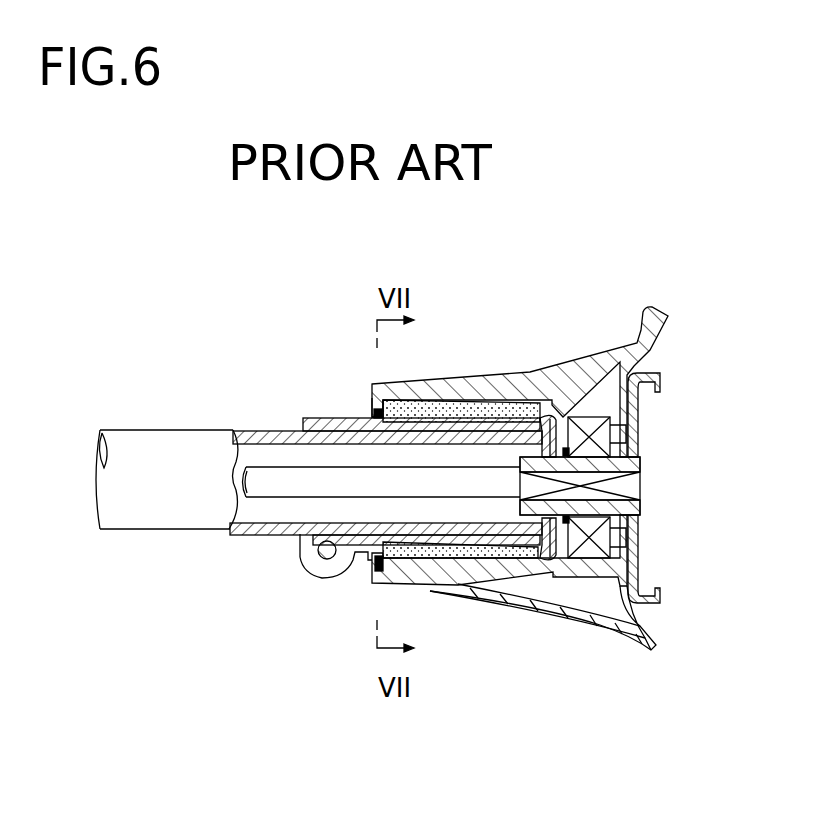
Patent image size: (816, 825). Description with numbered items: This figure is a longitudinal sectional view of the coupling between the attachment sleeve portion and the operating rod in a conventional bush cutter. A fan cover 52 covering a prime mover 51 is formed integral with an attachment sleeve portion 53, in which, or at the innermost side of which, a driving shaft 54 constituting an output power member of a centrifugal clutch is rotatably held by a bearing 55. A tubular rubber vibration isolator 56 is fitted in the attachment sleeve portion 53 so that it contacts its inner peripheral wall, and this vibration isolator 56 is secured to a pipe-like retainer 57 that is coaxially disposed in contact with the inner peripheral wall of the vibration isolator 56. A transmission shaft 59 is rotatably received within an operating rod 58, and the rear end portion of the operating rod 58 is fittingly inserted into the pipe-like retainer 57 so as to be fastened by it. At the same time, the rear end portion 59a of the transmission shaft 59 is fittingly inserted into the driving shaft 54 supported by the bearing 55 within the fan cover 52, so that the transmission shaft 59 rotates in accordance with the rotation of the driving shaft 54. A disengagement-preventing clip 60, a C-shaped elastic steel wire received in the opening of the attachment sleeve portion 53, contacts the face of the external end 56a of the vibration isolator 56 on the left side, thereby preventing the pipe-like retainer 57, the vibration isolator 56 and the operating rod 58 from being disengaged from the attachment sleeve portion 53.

The prime mover 51 is at (626, 664).
The fan cover 52 is at (634, 305).
The attachment sleeve portion 53 is at (430, 372).
The driving shaft 54 is at (634, 468).
The bearing 55 is at (603, 435).
The tubular rubber vibration isolator 56 is at (443, 545).
The external end 56a is at (371, 560).
The pipe-like retainer 57 is at (330, 417).
The operating rod 58 is at (143, 424).
The transmission shaft 59 is at (277, 478).
The rear end portion 59a is at (628, 488).
The disengagement-preventing clip 60 is at (371, 400).